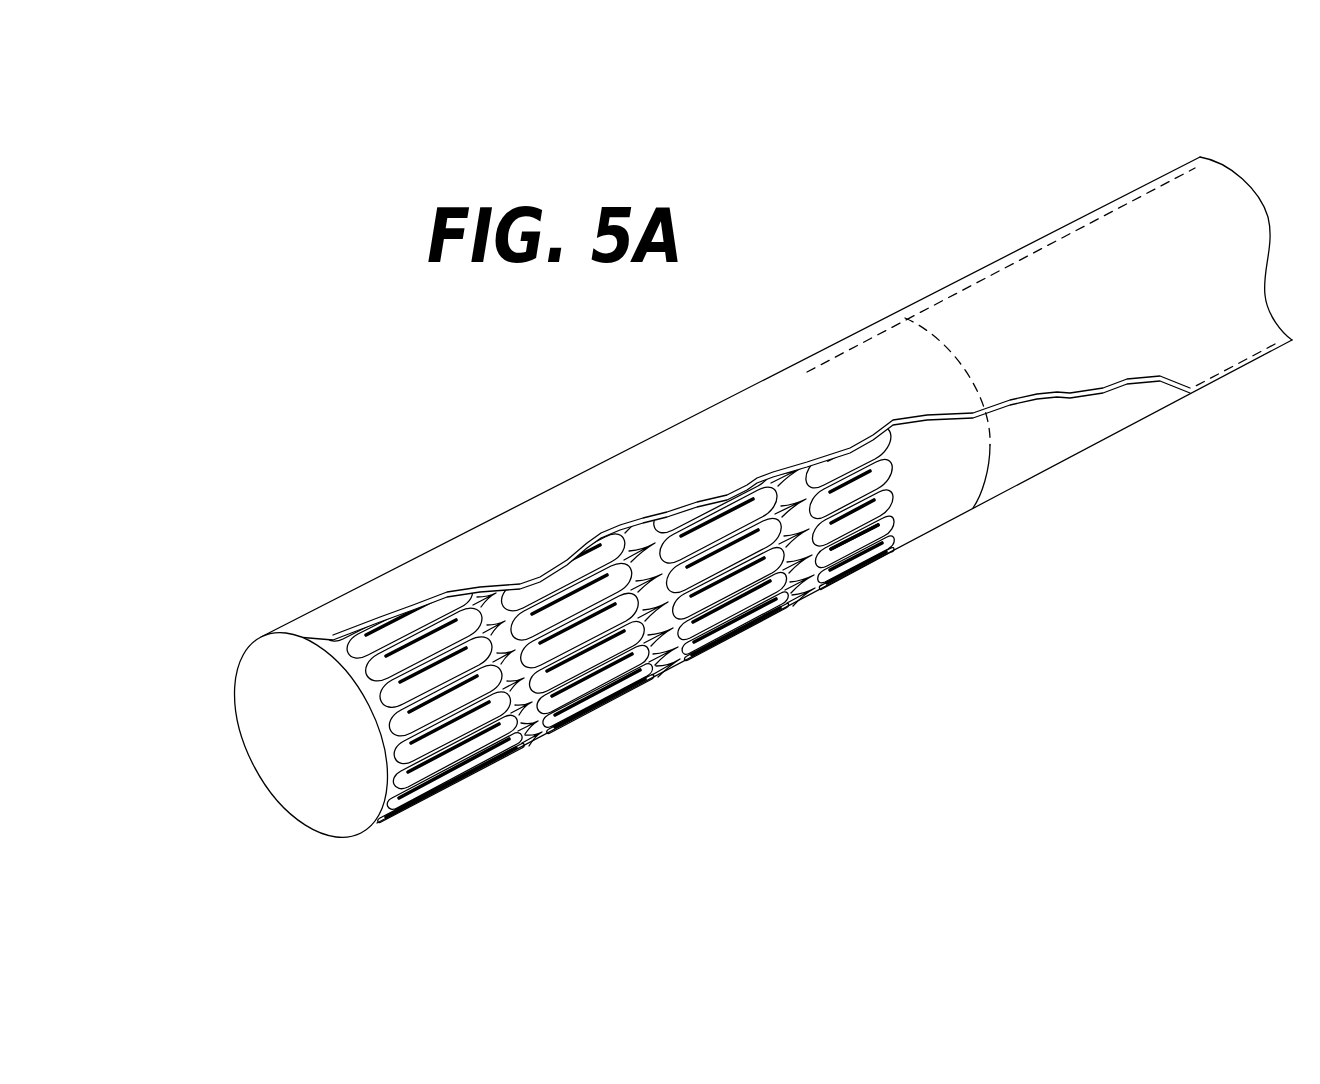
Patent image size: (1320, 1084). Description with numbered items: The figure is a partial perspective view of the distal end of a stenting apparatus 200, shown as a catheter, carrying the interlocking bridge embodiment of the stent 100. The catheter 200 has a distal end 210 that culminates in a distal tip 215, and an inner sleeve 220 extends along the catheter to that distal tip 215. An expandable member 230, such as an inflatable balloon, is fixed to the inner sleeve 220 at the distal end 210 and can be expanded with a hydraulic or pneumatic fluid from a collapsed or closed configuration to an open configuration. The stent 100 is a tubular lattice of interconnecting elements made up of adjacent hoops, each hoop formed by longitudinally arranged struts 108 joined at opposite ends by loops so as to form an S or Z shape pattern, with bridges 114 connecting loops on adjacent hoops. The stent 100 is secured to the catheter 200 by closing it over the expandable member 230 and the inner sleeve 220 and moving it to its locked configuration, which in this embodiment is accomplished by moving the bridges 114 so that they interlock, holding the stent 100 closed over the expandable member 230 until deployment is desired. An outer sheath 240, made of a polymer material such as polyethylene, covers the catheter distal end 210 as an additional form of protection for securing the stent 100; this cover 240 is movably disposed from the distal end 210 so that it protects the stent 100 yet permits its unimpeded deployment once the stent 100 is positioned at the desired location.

The stent 100 is at (732, 610).
The strut 108 is at (843, 540).
The bridge 114 is at (500, 623).
The stenting apparatus 200 is at (822, 330).
The distal end 210 is at (597, 467).
The distal tip 215 is at (275, 798).
The inner sleeve 220 is at (1070, 432).
The expandable member 230 is at (940, 503).
The outer sheath 240 is at (985, 327).